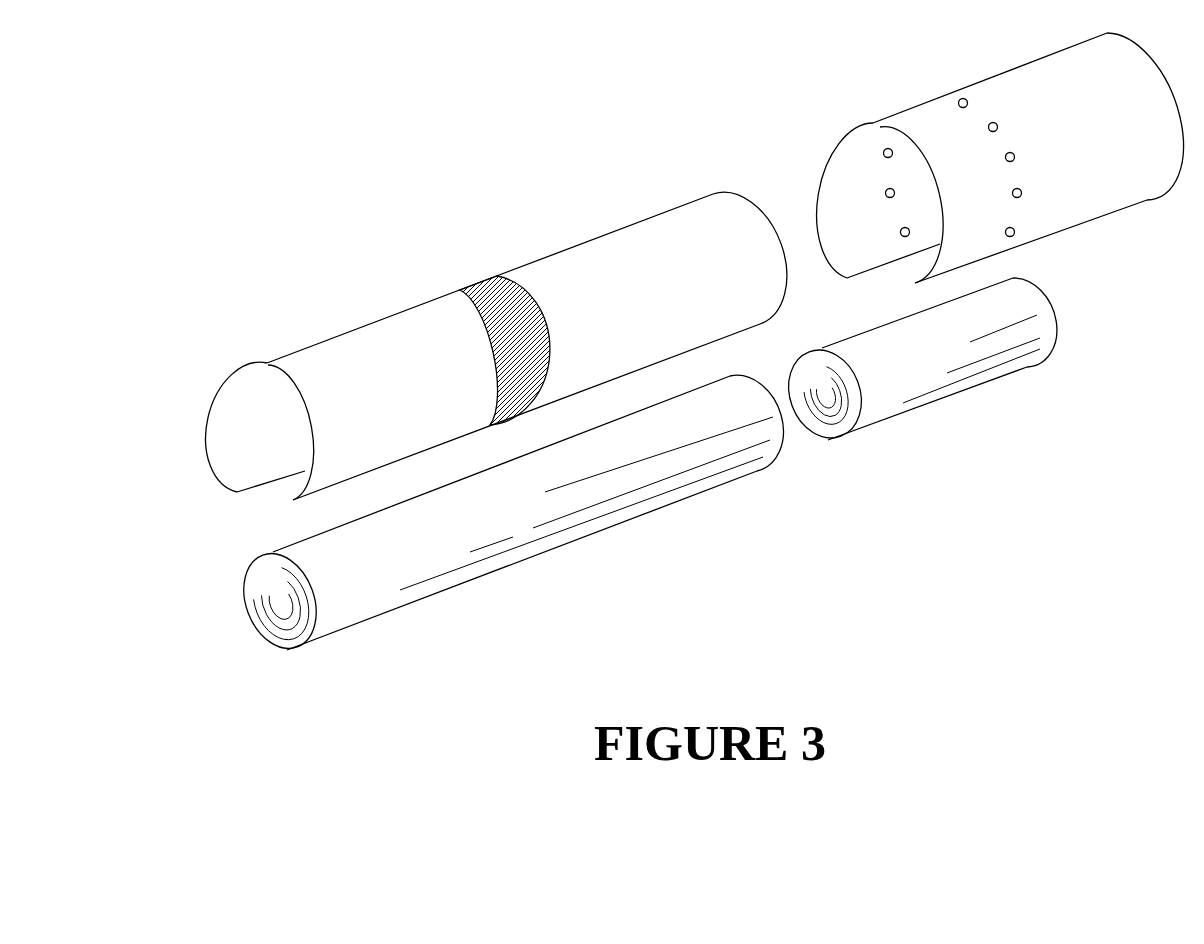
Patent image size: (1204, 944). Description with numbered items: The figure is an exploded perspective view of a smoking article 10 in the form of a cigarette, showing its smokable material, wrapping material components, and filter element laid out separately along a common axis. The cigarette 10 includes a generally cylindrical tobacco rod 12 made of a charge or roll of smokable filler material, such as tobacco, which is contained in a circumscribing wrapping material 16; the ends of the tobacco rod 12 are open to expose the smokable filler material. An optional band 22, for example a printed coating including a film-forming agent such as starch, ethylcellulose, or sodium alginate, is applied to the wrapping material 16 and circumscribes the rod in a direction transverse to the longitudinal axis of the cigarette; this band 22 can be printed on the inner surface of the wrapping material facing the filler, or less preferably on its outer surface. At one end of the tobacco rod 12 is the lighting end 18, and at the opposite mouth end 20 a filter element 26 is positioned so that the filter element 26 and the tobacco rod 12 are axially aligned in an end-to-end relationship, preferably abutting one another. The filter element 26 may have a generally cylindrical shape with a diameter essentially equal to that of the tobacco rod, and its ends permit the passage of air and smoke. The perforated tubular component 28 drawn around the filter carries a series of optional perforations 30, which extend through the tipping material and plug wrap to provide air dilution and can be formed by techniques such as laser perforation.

The smoking article 10 is at (563, 212).
The tobacco rod 12 is at (423, 577).
The wrapping material 16 is at (707, 217).
The lighting end 18 is at (228, 612).
The mouth end 20 is at (1072, 298).
The band 22 is at (473, 282).
The filter element 26 is at (920, 392).
The perforated tube 28 is at (1037, 95).
The perforations 30 is at (1022, 196).